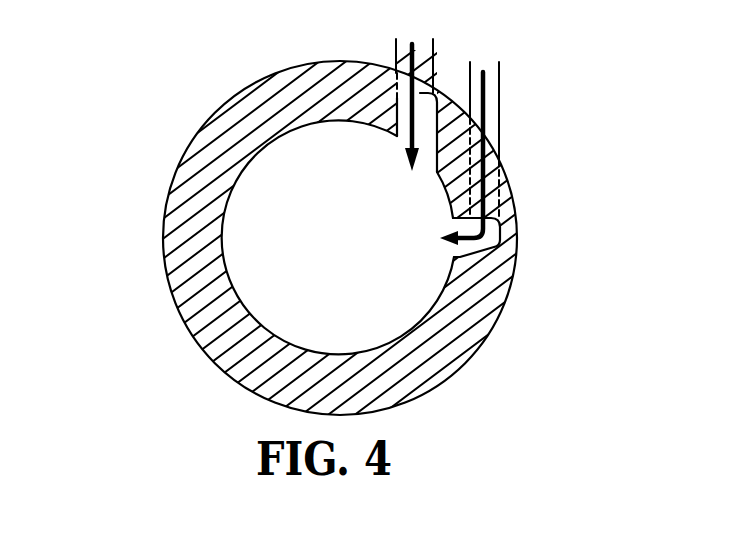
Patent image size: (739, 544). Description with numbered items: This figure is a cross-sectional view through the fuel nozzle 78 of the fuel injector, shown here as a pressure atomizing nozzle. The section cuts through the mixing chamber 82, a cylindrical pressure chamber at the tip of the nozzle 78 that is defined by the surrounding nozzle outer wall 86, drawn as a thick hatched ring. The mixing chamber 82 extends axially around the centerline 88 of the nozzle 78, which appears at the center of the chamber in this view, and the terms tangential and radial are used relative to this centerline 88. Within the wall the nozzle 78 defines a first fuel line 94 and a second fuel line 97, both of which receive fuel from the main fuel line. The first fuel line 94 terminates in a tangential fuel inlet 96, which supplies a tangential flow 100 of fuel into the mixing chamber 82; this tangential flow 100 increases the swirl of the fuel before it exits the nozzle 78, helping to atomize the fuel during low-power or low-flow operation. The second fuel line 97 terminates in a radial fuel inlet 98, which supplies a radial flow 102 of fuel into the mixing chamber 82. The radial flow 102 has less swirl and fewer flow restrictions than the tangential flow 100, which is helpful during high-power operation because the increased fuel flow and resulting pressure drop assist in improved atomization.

The nozzle 78 is at (305, 272).
The mixing chamber 82 is at (387, 318).
The nozzle outer wall 86 is at (215, 118).
The centerline 88 is at (338, 232).
The first fuel line 94 is at (430, 52).
The tangential fuel inlet 96 is at (391, 131).
The second fuel line 97 is at (487, 96).
The radial fuel inlet 98 is at (502, 244).
The tangential flow 100 is at (415, 88).
The radial flow 102 is at (485, 181).